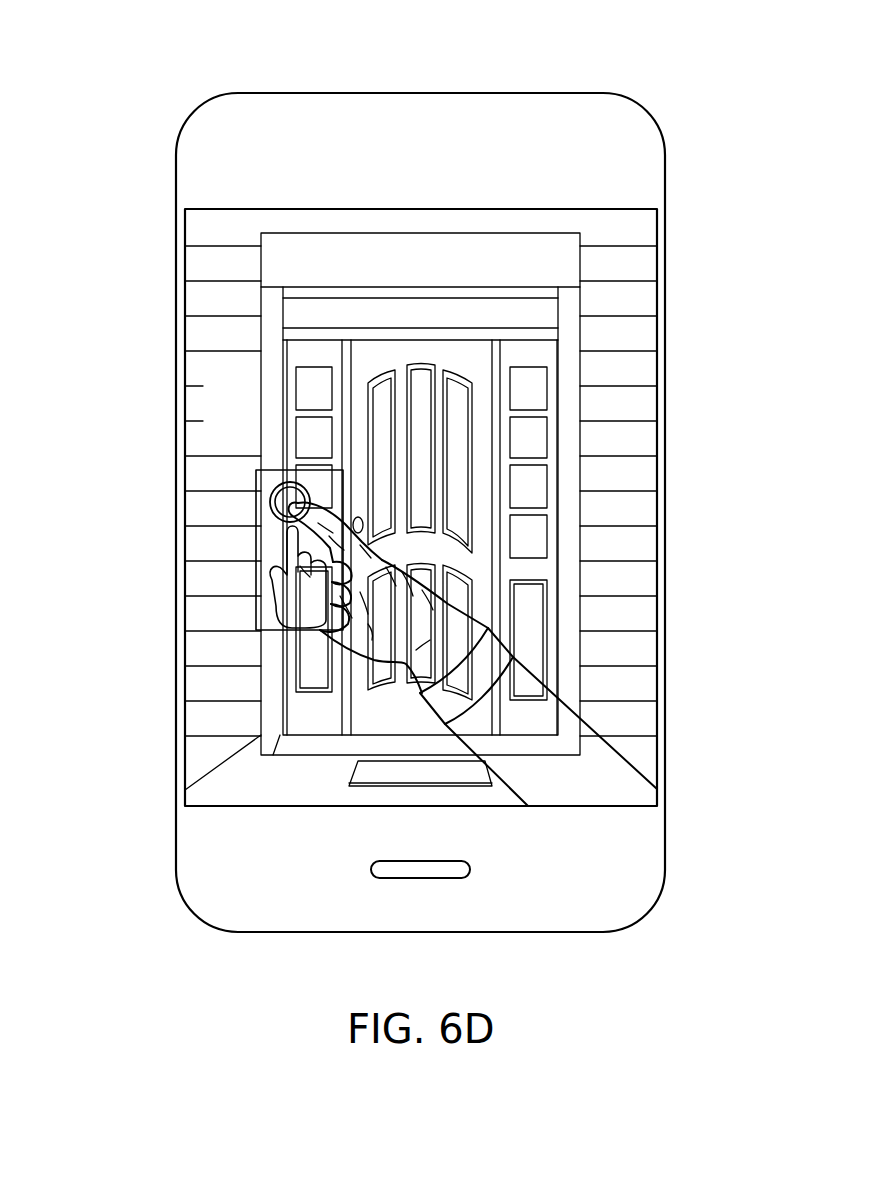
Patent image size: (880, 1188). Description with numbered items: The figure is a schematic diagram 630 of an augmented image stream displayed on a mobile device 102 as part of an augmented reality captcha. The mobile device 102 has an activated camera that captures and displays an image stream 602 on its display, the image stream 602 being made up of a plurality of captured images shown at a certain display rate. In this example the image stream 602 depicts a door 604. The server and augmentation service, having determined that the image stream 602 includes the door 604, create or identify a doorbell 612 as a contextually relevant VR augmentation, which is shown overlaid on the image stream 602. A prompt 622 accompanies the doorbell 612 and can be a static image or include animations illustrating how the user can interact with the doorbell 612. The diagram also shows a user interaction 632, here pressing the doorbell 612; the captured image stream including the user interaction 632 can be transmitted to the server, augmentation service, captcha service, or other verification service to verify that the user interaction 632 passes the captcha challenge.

The schematic diagram 630 is at (121, 97).
The mobile device 102 is at (661, 221).
The image stream 602 is at (632, 442).
The door 604 is at (375, 465).
The doorbell 612 is at (272, 506).
The prompt 622 is at (276, 588).
The user interaction 632 is at (366, 648).